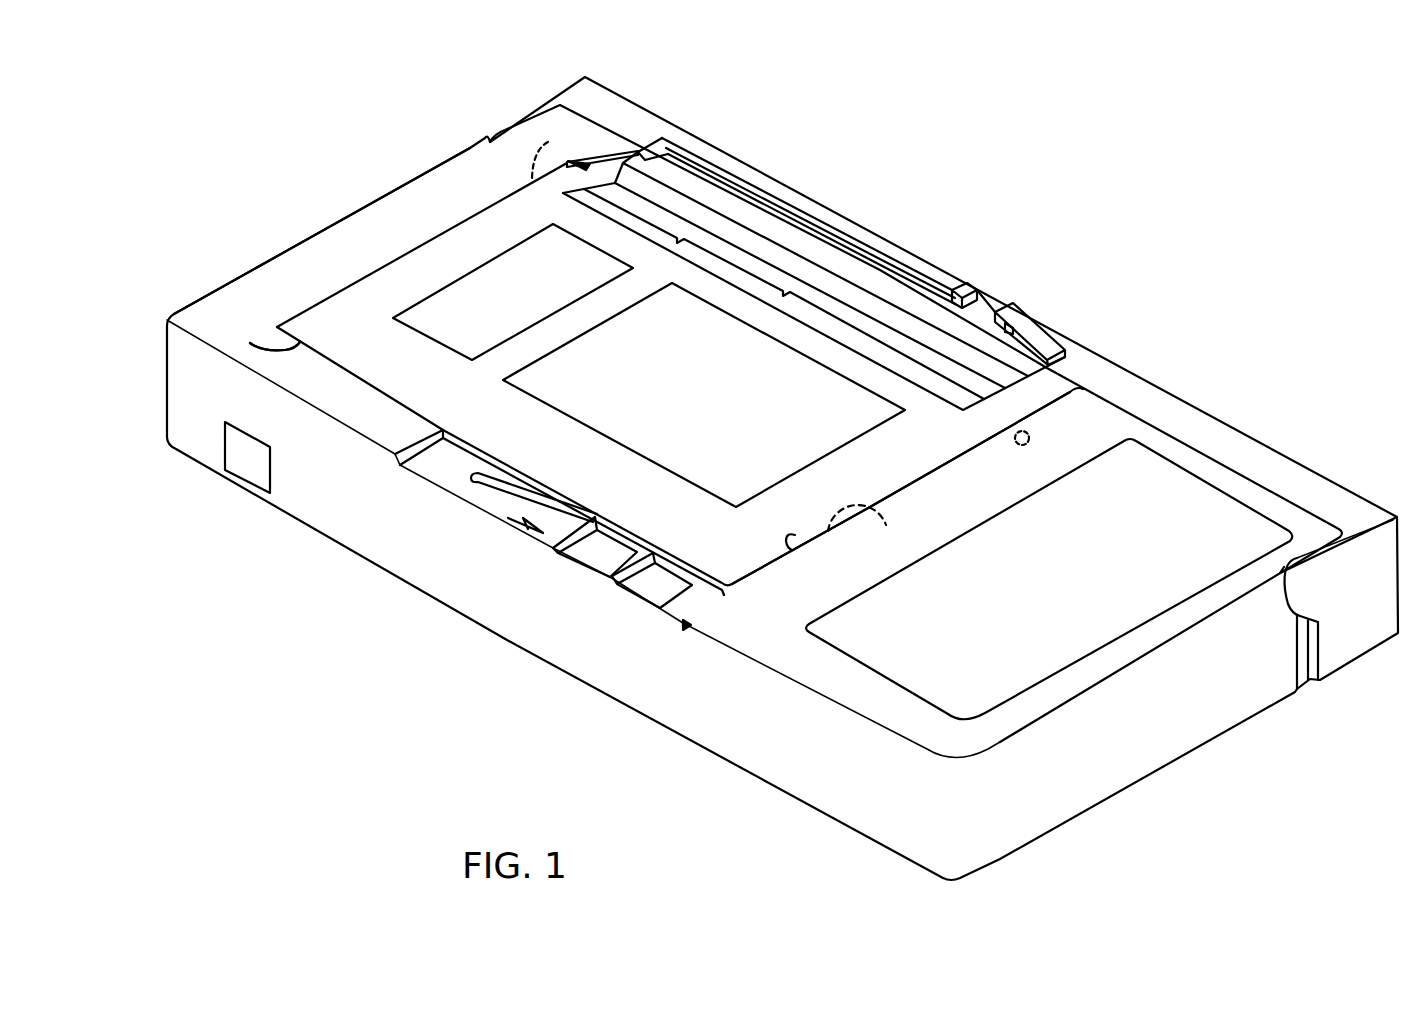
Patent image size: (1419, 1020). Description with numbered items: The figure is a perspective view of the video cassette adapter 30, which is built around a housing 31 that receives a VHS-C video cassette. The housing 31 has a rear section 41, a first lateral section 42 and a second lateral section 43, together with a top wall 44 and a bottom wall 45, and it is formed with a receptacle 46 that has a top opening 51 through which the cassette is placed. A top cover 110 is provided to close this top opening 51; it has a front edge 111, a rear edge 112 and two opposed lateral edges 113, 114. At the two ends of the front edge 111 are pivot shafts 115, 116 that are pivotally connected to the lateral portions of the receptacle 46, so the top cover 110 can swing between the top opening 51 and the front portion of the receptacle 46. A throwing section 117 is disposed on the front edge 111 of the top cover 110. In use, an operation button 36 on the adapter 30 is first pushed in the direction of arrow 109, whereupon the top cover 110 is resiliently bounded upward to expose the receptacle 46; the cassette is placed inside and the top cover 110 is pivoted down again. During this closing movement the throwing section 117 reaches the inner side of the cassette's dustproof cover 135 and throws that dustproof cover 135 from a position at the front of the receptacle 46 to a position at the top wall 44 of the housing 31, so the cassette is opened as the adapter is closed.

The video cassette adapter 30 is at (449, 153).
The housing 31 is at (258, 280).
The operation button 36 is at (597, 553).
The rear section 41 is at (395, 556).
The first lateral section 42 is at (1182, 740).
The second lateral section 43 is at (378, 190).
The top wall 44 is at (996, 629).
The bottom wall 45 is at (628, 712).
The receptacle 46 is at (857, 536).
The top opening 51 is at (795, 535).
The arrow 109 is at (458, 487).
The top cover 110 is at (700, 438).
The front edge 111 is at (893, 270).
The rear edge 112 is at (257, 333).
The lateral edge 113 is at (905, 496).
The lateral edge 114 is at (437, 233).
The pivot shaft 115 is at (1030, 435).
The pivot shaft 116 is at (585, 153).
The throwing section 117 is at (828, 262).
The dustproof cover 135 is at (1200, 405).